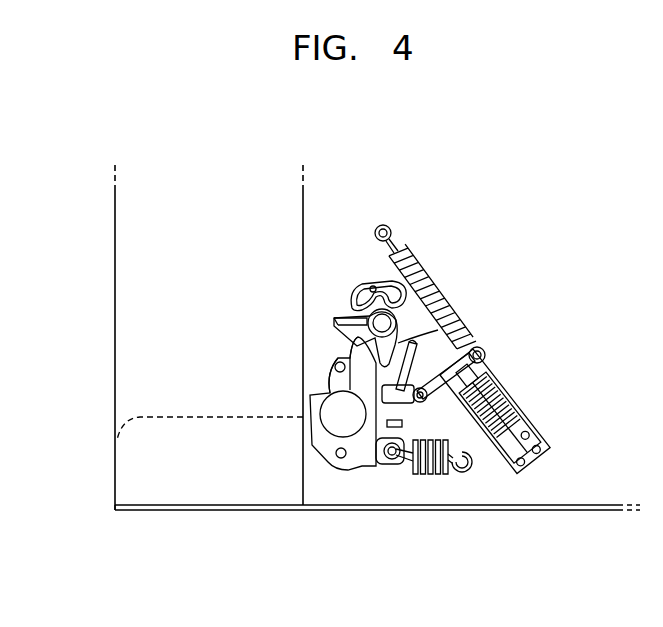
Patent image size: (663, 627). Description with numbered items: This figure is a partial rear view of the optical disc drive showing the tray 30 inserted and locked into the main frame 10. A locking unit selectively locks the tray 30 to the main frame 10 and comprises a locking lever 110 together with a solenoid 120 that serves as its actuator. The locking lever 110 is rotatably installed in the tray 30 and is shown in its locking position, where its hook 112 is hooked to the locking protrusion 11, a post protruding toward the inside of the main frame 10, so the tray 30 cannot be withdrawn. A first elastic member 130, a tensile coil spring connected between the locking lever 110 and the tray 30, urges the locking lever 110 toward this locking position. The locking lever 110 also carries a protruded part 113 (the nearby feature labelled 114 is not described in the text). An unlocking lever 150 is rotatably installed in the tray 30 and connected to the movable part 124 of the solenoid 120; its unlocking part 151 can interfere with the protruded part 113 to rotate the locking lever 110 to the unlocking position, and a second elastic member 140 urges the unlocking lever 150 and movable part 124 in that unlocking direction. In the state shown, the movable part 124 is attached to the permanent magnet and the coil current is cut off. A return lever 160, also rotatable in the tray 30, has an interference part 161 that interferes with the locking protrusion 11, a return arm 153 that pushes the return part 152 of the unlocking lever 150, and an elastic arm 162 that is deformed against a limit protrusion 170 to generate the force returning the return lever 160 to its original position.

The main frame 10 is at (128, 302).
The locking protrusion 11 is at (333, 379).
The tray 30 is at (605, 511).
The locking lever 110 is at (321, 478).
The hook 112 is at (334, 368).
The protruded part 113 is at (400, 462).
The guide portion 114 is at (341, 357).
The solenoid 120 is at (523, 485).
The movable part 124 is at (478, 364).
The first elastic member 130 is at (446, 478).
The second elastic member 140 is at (420, 267).
The unlocking lever 150 is at (508, 387).
The unlocking part 151 is at (380, 465).
The return part 152 is at (447, 350).
The return arm 153 is at (409, 338).
The return lever 160 is at (318, 321).
The interference part 161 is at (335, 313).
The elastic arm 162 is at (358, 283).
The limit protrusion 170 is at (345, 290).